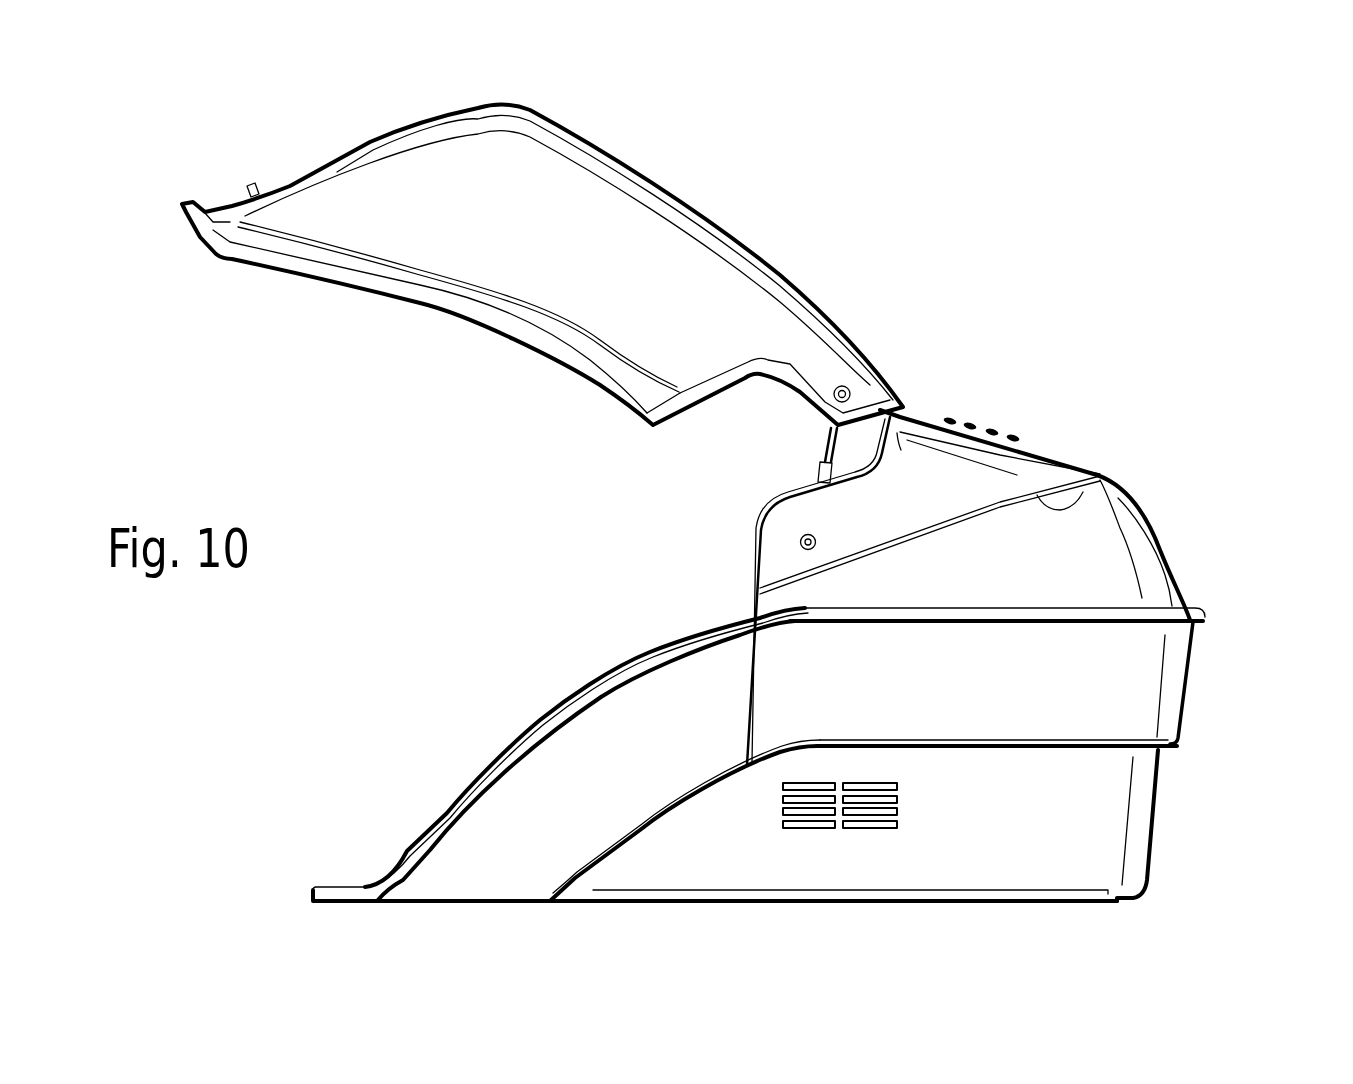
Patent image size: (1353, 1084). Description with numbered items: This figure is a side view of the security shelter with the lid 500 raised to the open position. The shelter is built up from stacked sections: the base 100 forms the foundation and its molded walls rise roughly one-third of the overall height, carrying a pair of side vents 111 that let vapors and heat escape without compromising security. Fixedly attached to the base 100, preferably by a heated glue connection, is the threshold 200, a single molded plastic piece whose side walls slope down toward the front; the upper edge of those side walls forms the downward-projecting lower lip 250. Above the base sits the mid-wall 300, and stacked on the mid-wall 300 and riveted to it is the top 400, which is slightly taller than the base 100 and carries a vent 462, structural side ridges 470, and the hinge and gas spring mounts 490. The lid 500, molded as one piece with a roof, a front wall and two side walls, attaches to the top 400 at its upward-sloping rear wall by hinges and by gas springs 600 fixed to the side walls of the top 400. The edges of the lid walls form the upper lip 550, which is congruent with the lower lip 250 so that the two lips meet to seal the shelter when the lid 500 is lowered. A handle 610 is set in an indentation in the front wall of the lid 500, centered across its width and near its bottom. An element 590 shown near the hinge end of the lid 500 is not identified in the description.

The base 100 is at (1087, 845).
The side vents 111 is at (873, 828).
The threshold 200 is at (497, 870).
The lower lip 250 is at (410, 853).
The mid-wall 300 is at (1142, 690).
The top 400 is at (1113, 560).
The vent 462 is at (973, 420).
The structural side ridges 470 is at (1090, 480).
The hinge and gas spring mounts 490 is at (800, 544).
The lid 500 is at (637, 260).
The upper lip 550 is at (313, 270).
The lid fastener 590 is at (853, 388).
The gas springs 600 is at (817, 470).
The handle 610 is at (248, 187).